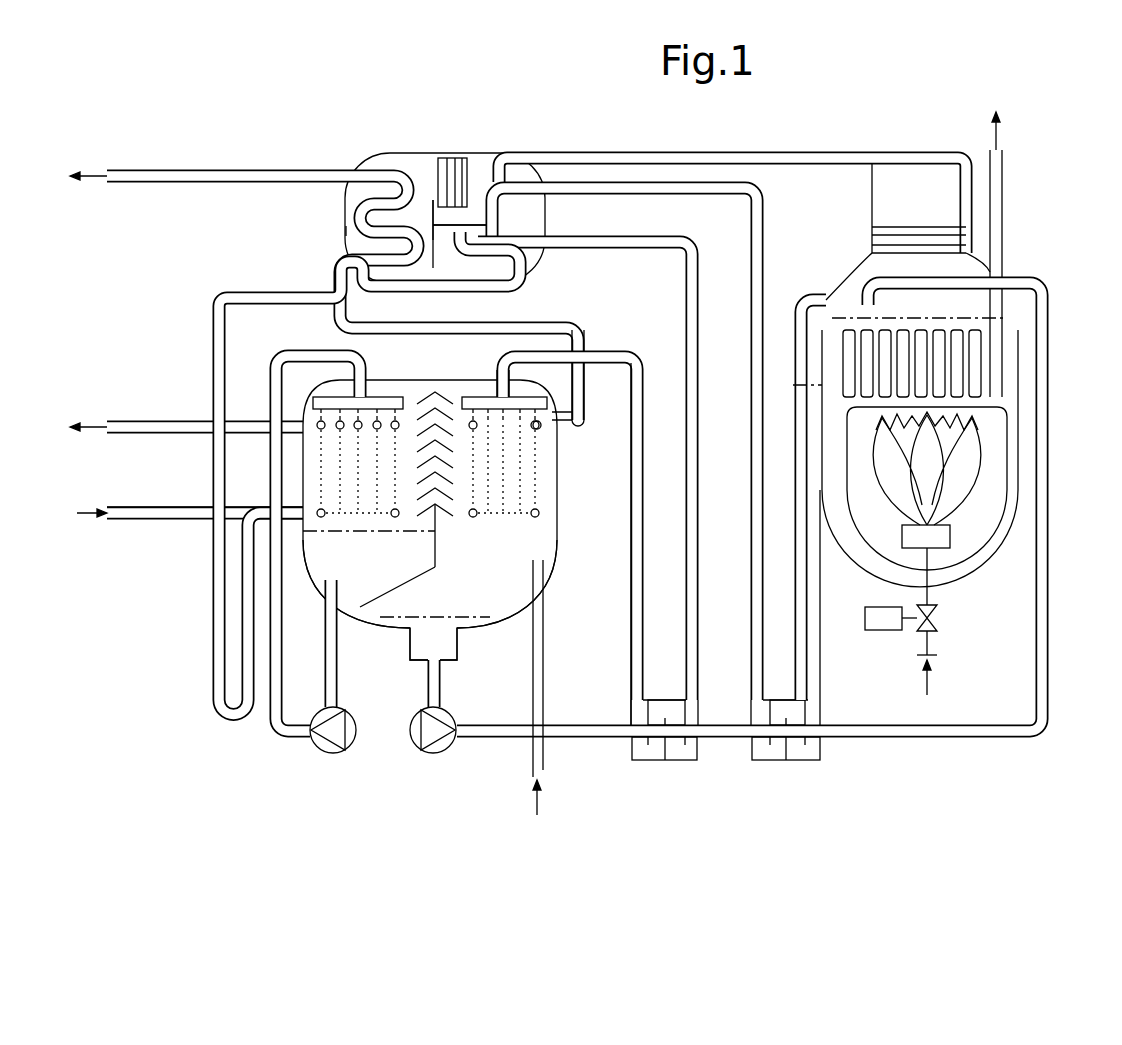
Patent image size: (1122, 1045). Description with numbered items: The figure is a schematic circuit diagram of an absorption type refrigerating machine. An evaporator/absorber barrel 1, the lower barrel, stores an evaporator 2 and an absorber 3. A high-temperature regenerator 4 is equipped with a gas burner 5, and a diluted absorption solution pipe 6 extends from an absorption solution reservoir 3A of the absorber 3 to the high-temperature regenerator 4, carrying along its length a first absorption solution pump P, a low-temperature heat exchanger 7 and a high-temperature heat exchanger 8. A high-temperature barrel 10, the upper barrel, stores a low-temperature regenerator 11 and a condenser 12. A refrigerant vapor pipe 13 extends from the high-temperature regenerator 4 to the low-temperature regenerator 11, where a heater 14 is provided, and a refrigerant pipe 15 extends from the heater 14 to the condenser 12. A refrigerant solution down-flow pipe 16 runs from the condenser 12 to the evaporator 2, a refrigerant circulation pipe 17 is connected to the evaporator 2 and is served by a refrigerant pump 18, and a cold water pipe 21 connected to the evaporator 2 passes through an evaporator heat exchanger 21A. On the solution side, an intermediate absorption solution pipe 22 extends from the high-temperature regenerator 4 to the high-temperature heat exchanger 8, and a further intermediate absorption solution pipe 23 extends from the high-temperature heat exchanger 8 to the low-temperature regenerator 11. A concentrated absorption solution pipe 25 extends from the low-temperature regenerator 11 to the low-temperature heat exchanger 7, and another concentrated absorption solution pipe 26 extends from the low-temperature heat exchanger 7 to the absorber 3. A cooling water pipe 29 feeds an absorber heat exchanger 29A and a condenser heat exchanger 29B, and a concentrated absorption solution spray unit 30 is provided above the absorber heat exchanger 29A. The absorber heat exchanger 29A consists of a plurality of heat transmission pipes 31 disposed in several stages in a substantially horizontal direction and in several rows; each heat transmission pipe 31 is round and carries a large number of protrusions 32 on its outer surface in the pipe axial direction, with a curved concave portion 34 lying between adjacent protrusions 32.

The evaporator/absorber barrel 1 is at (305, 383).
The evaporator 2 is at (303, 445).
The absorber 3 is at (505, 590).
The absorption solution reservoir 3A is at (412, 645).
The high-temperature regenerator 4 is at (1018, 425).
The gas burner 5 is at (950, 535).
The diluted absorption solution pipe 6 is at (460, 740).
The low-temperature heat exchanger 7 is at (660, 760).
The high-temperature heat exchanger 8 is at (780, 760).
The high-temperature barrel 10 is at (428, 152).
The low-temperature regenerator 11 is at (478, 165).
The condenser 12 is at (345, 212).
The refrigerant vapor pipe 13 is at (856, 152).
The heater 14 is at (418, 170).
The refrigerant pipe 15 is at (530, 245).
The refrigerant solution down-flow pipe 16 is at (213, 298).
The refrigerant circulation pipe 17 is at (268, 735).
The refrigerant pump 18 is at (318, 745).
The cold water pipe 21 is at (180, 521).
The evaporator heat exchanger 21A is at (300, 470).
The intermediate absorption solution pipe 22 is at (822, 690).
The intermediate absorption solution pipe 23 is at (750, 690).
The concentrated absorption solution pipe 25 is at (680, 690).
The concentrated absorption solution pipe 26 is at (630, 690).
The cooling water pipe 29 is at (547, 697).
The absorber heat exchanger 29A is at (558, 525).
The condenser heat exchanger 29B is at (345, 232).
The concentrated absorption solution spray unit 30 is at (528, 387).
The heat transmission pipe 31 is at (542, 420).
The protrusion 32 is at (600, 422).
The concave portion 34 is at (555, 445).
The first absorption solution pump P is at (420, 745).